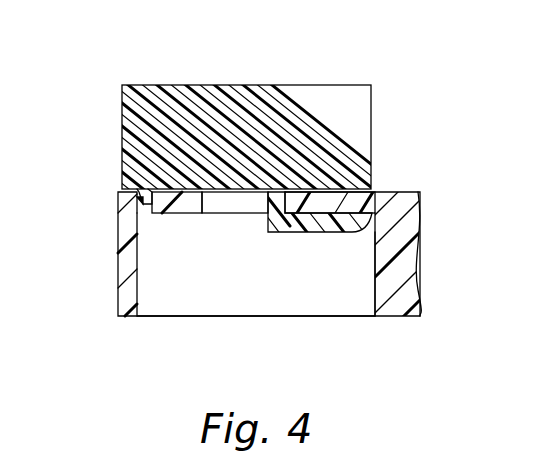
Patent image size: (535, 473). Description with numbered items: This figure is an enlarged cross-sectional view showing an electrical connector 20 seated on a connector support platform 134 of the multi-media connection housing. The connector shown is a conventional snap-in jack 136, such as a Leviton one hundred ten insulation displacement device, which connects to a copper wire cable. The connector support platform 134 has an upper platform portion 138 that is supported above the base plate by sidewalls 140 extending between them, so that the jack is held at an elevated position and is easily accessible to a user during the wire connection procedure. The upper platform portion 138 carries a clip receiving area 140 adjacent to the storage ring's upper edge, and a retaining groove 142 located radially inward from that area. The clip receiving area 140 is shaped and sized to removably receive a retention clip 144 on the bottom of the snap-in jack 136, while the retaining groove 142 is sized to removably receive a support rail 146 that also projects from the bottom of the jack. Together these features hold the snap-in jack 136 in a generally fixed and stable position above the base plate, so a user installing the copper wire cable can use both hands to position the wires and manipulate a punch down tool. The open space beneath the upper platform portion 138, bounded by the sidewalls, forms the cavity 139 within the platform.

The electrical connector 20 is at (352, 100).
The connector support platform 134 is at (125, 272).
The snap-in jack 136 is at (235, 127).
The upper platform portion 138 is at (233, 203).
The cavity 139 is at (255, 275).
The clip receiving area 140 is at (332, 205).
The retaining groove 142 is at (143, 216).
The retention clip 144 is at (315, 223).
The support rail 146 is at (135, 199).